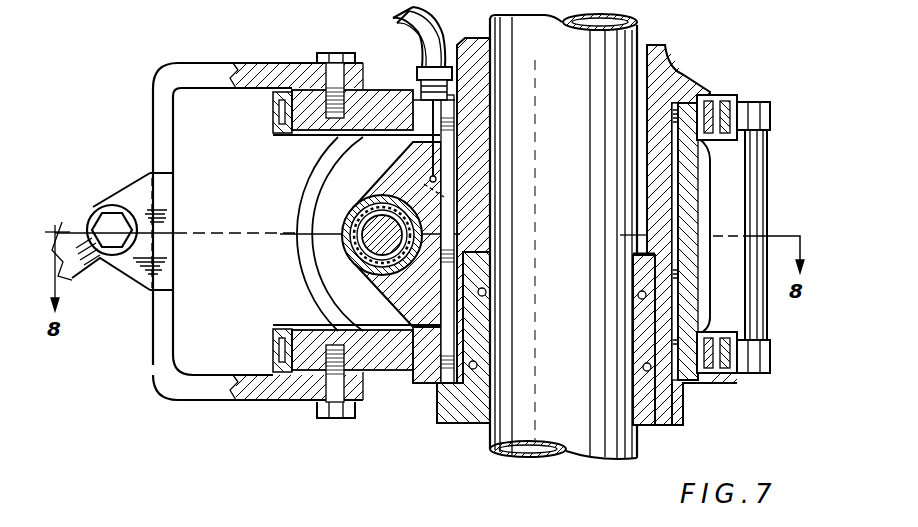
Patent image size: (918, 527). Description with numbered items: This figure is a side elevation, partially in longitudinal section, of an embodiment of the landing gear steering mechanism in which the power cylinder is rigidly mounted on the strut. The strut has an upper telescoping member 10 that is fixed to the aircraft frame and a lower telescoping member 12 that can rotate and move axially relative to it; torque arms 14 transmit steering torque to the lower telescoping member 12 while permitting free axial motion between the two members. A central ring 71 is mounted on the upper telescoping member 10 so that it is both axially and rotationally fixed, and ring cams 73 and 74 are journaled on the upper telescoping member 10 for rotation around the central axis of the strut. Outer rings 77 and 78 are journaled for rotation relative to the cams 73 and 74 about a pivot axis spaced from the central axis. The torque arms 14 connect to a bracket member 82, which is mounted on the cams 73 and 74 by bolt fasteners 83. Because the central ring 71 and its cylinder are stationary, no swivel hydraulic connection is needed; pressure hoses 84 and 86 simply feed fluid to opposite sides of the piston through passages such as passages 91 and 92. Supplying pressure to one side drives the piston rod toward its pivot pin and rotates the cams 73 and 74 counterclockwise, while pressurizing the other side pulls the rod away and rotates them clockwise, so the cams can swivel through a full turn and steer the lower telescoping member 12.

The upper telescoping member 10 is at (673, 82).
The lower telescoping member 12 is at (640, 33).
The torque arms 14 is at (73, 242).
The central ring 71 is at (690, 218).
The ring cam 73 is at (313, 125).
The ring cam 74 is at (307, 335).
The outer ring 77 is at (275, 105).
The outer ring 78 is at (272, 352).
The bracket member 82 is at (220, 70).
The bolt fasteners 83 is at (338, 55).
The pressure hose 84 is at (446, 25).
The pressure hose 86 is at (396, 21).
The passage 91 is at (431, 187).
The passage 92 is at (444, 201).